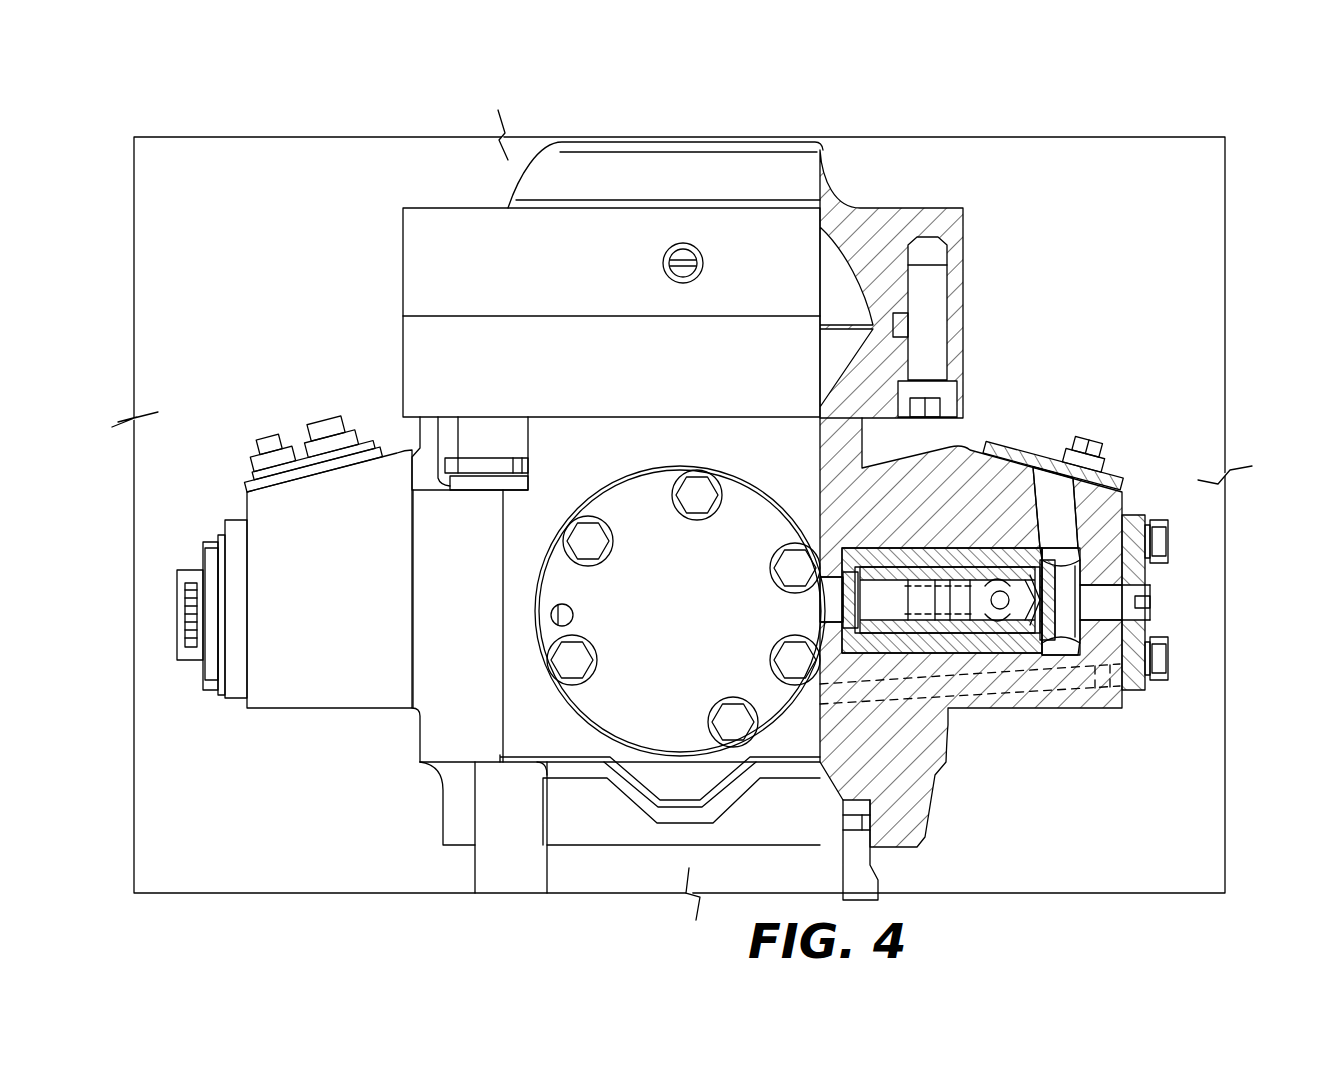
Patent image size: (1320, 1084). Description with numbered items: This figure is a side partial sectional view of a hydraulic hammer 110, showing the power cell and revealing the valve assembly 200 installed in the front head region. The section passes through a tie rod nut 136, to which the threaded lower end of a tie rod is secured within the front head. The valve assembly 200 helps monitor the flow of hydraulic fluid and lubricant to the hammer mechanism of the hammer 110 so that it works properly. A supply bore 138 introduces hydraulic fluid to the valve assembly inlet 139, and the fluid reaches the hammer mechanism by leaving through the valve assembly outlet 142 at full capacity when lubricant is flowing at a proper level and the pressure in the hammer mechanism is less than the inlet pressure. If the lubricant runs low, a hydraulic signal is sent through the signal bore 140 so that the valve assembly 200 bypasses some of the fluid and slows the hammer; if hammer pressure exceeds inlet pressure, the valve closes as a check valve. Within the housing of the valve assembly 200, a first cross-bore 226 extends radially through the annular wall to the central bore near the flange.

The pump assembly 110 is at (1048, 126).
The tie rod nut 136 is at (480, 435).
The supply bore 138 is at (1053, 498).
The valve assembly inlet 139 is at (1067, 537).
The signal bore 140 is at (895, 670).
The valve assembly outlet 142 is at (840, 600).
The valve assembly 200 is at (1162, 603).
The first cross-bore 226 is at (1067, 573).